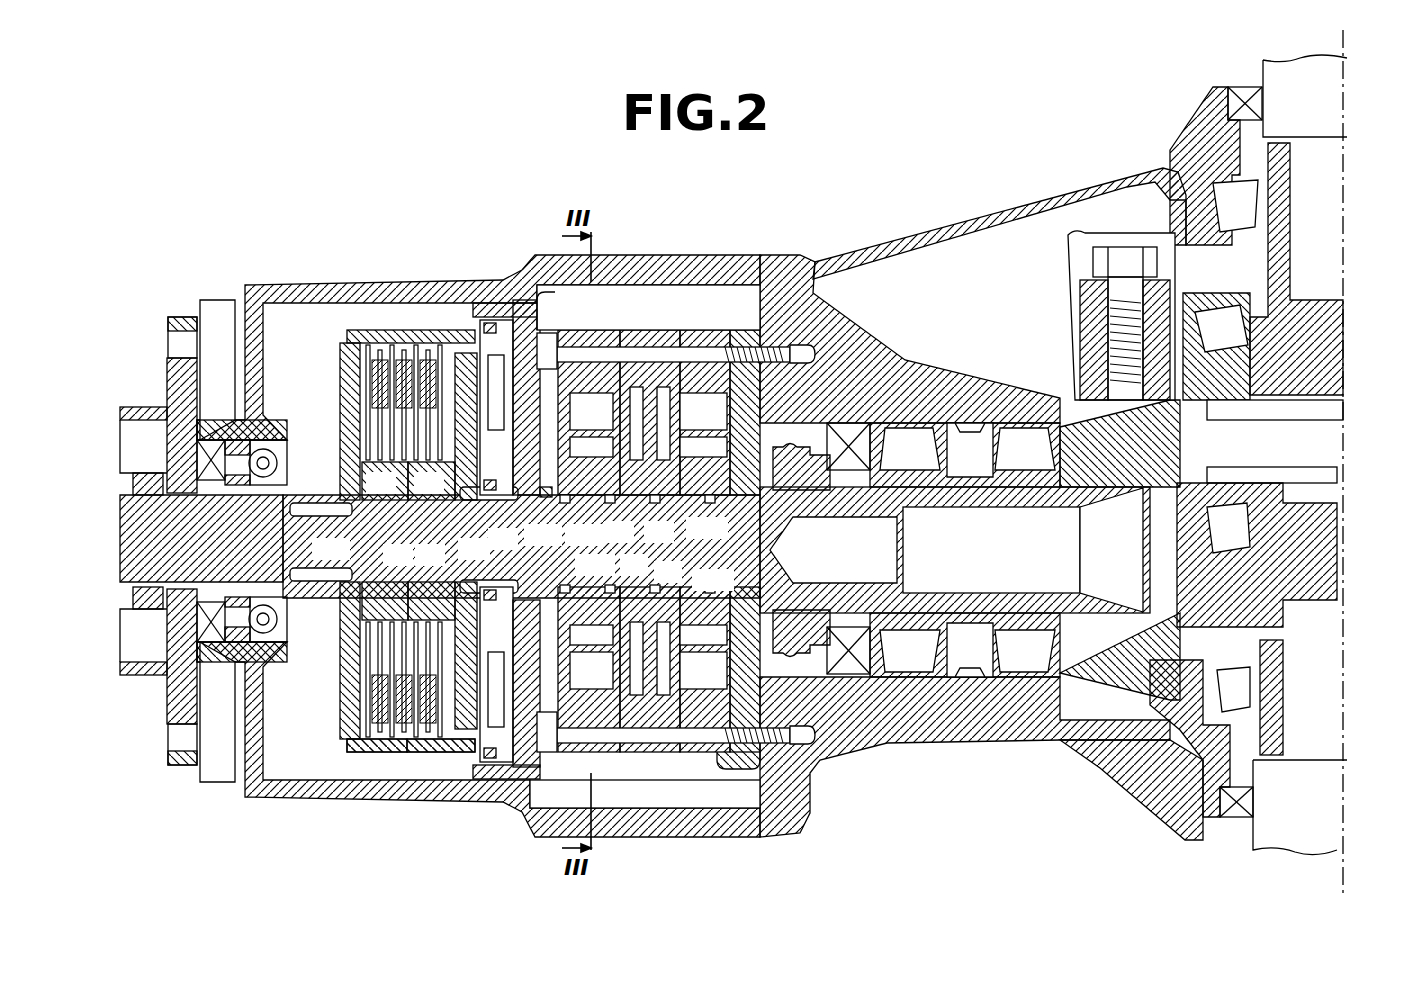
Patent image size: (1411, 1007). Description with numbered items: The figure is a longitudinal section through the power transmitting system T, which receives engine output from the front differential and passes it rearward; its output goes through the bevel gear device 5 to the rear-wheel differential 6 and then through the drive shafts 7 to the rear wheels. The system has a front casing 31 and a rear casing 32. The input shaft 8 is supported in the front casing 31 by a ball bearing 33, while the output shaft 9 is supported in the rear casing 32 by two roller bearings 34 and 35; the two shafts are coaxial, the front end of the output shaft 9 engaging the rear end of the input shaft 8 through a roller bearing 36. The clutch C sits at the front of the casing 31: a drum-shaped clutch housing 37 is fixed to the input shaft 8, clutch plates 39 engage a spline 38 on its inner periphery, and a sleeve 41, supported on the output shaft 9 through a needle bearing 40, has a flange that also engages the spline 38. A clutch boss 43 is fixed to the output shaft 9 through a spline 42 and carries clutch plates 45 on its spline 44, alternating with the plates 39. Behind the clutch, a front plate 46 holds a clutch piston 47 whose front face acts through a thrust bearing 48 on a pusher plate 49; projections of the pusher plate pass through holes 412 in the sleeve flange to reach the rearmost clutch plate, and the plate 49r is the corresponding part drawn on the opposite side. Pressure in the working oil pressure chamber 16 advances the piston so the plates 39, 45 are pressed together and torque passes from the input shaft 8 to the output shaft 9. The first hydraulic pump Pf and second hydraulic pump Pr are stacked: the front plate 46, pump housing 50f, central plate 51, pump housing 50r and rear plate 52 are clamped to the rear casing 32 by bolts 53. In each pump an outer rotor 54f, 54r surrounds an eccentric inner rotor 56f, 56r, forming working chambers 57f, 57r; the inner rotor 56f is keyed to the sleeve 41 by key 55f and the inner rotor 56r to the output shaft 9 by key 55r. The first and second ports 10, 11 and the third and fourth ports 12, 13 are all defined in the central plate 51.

The bevel gear device 5 is at (1085, 395).
The differential for the rear wheels 6 is at (1322, 303).
The drive shafts 7 is at (1343, 102).
The input shaft 8 is at (120, 510).
The output shaft 9 is at (860, 510).
The first port 10 is at (619, 520).
The second port 11 is at (627, 573).
The third port 12 is at (666, 576).
The fourth port 13 is at (659, 520).
The working oil pressure chamber 16 is at (648, 657).
The front casing 31 is at (305, 285).
The rear casing 32 is at (948, 226).
The ball bearing 33 is at (273, 442).
The roller bearing 34 is at (925, 487).
The roller bearing 35 is at (1025, 480).
The roller bearing 36 is at (521, 546).
The clutch housing 37 is at (345, 362).
The spline 38 is at (376, 360).
The clutch plates 39 is at (418, 360).
The needle bearing 40 is at (488, 540).
The sleeve 41 is at (462, 353).
The holes 412 is at (505, 541).
The spline 42 is at (390, 582).
The clutch boss 43 is at (430, 582).
The spline 44 is at (431, 481).
The clutch plates 45 is at (385, 481).
The front plate 46 is at (548, 333).
The clutch piston 47 is at (537, 533).
The thrust bearing 48 is at (460, 752).
The pusher plate 49 is at (674, 690).
The plate 49r is at (420, 752).
The pump housing 50f is at (605, 330).
The pump housing 50r is at (695, 330).
The central plate 51 is at (650, 520).
The rear plate 52 is at (738, 530).
The bolts 53 is at (531, 270).
The outer rotor 54f is at (591, 425).
The outer rotor 54r is at (703, 425).
The key 55f is at (582, 521).
The key 55r is at (707, 518).
The inner rotor 56f is at (587, 573).
The inner rotor 56r is at (713, 580).
The working chambers 57f is at (543, 517).
The working chambers 57r is at (775, 480).
The clutch C is at (400, 312).
The power transmitting system T is at (466, 222).
The first hydraulic pump Pf is at (603, 312).
The second hydraulic pump Pr is at (707, 305).